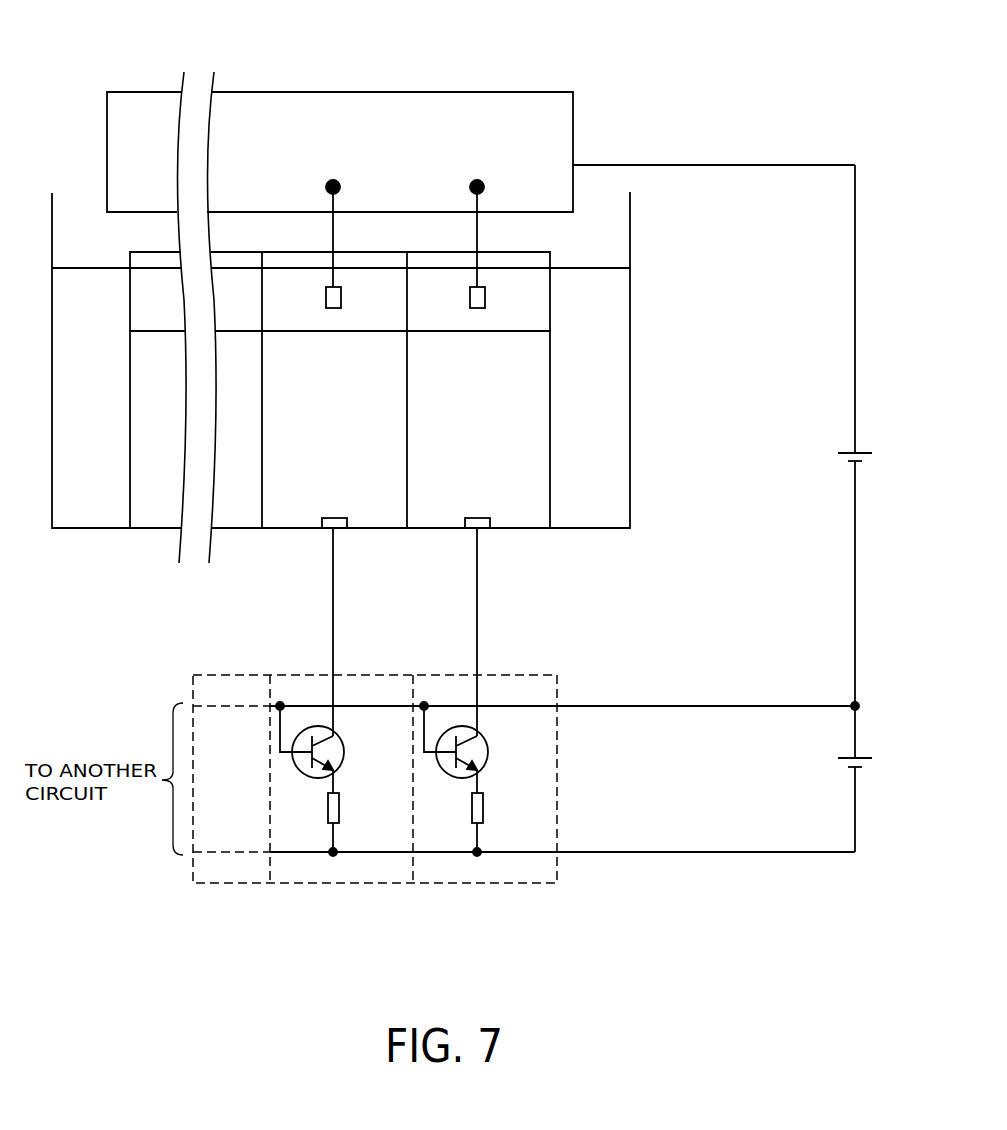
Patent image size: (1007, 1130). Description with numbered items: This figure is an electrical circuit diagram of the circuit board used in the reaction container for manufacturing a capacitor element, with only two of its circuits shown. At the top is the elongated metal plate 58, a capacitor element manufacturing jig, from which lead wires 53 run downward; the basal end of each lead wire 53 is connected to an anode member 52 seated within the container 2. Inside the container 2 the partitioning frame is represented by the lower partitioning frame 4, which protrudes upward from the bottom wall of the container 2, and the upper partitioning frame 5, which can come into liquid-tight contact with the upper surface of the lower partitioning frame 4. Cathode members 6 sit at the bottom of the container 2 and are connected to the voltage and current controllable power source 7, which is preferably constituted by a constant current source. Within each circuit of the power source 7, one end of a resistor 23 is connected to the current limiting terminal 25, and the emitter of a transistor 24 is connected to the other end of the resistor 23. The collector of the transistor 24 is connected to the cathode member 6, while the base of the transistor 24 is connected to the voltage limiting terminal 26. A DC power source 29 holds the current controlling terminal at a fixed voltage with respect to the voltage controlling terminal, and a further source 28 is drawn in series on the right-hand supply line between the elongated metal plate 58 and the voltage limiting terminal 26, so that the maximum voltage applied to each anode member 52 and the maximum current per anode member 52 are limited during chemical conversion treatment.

The container 2 is at (630, 473).
The lower partitioning frame 4 is at (407, 398).
The upper partitioning frame 5 is at (407, 300).
The cathode member 6 is at (338, 527).
The voltage and current controllable power source 7 is at (305, 870).
The resistor 23 is at (339, 808).
The transistor 24 is at (345, 748).
The current limiting terminal 25 is at (558, 855).
The voltage limiting terminal 26 is at (558, 703).
The power source 28 is at (845, 450).
The DC power source 29 is at (842, 762).
The anode member 52 is at (482, 297).
The lead wire 53 is at (480, 235).
The elongated metal plate 58 is at (507, 117).